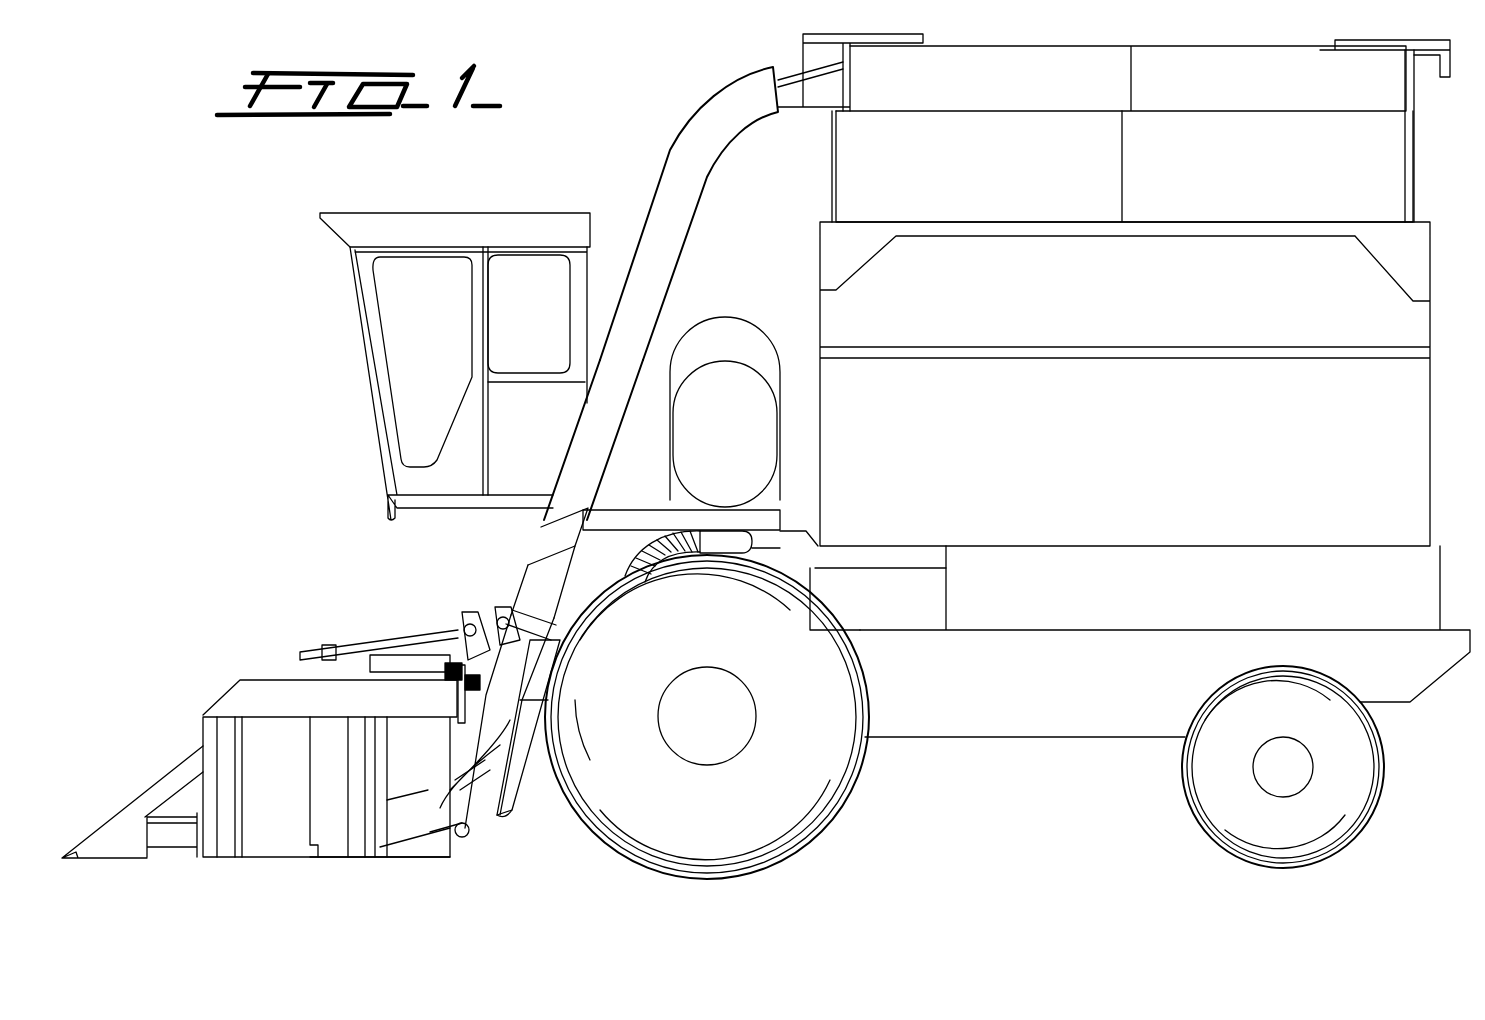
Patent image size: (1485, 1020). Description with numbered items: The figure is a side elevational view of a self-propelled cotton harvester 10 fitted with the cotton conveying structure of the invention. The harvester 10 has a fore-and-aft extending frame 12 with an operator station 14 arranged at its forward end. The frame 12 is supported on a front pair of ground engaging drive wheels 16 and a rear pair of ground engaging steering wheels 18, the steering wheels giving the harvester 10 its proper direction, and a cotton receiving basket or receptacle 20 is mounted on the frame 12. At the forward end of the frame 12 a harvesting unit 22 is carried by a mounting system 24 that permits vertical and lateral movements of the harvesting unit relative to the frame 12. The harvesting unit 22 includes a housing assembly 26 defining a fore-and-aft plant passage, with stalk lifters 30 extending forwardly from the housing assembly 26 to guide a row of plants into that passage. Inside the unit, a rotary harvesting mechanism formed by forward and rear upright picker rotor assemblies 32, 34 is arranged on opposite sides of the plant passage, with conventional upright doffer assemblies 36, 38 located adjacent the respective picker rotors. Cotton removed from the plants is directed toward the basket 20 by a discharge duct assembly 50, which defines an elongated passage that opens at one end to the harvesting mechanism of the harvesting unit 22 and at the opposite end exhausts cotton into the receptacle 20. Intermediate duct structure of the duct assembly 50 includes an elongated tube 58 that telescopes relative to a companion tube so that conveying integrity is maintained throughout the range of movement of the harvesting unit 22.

The cotton harvester 10 is at (335, 356).
The frame 12 is at (1018, 717).
The operator station 14 is at (403, 483).
The ground engaging drive wheels 16 is at (800, 797).
The ground engaging steering wheels 18 is at (1202, 805).
The cotton receiving basket 20 is at (995, 179).
The harvesting unit 22 is at (272, 678).
The mounting system 24 is at (448, 697).
The housing assembly 26 is at (228, 700).
The stalk lifters 30 is at (521, 579).
The forward upright picker rotor assembly 32 is at (368, 858).
The rear upright picker rotor assembly 34 is at (440, 838).
The upright doffer assembly 36 is at (443, 808).
The upright doffer assembly 38 is at (549, 575).
The discharge duct assembly 50 is at (508, 815).
The elongated tube 58 is at (520, 762).